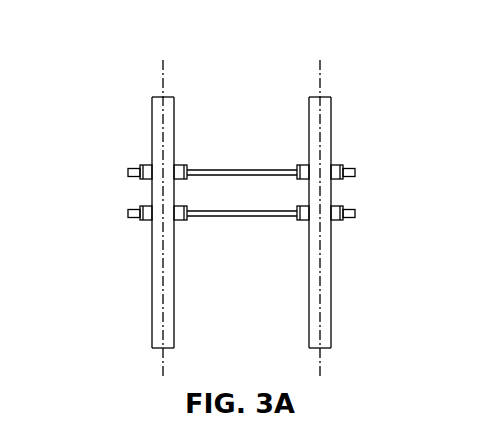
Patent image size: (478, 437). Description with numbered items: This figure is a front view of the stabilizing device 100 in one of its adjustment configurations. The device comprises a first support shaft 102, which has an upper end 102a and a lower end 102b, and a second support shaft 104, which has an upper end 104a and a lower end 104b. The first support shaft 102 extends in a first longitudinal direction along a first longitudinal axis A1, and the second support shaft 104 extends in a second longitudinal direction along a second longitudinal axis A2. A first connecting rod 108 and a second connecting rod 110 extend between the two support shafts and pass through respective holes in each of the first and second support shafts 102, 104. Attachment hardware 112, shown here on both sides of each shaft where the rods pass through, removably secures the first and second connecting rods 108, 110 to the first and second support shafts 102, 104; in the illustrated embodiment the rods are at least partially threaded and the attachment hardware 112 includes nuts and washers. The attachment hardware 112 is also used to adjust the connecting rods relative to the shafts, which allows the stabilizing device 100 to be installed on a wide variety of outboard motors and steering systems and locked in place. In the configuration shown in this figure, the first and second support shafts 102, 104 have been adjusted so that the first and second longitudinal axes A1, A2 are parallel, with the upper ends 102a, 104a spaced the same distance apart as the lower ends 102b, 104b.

The stabilizing device 100 is at (255, 82).
The first support shaft 102 is at (152, 263).
The upper end of first support shaft 102a is at (138, 117).
The lower end of first support shaft 102b is at (140, 332).
The second support shaft 104 is at (331, 270).
The upper end of second support shaft 104a is at (347, 125).
The lower end of second support shaft 104b is at (343, 338).
The first connecting rod 108 is at (261, 168).
The second connecting rod 110 is at (218, 218).
The attachment hardware 112 is at (113, 193).
The first longitudinal axis A1 is at (162, 85).
The second longitudinal axis A2 is at (322, 87).